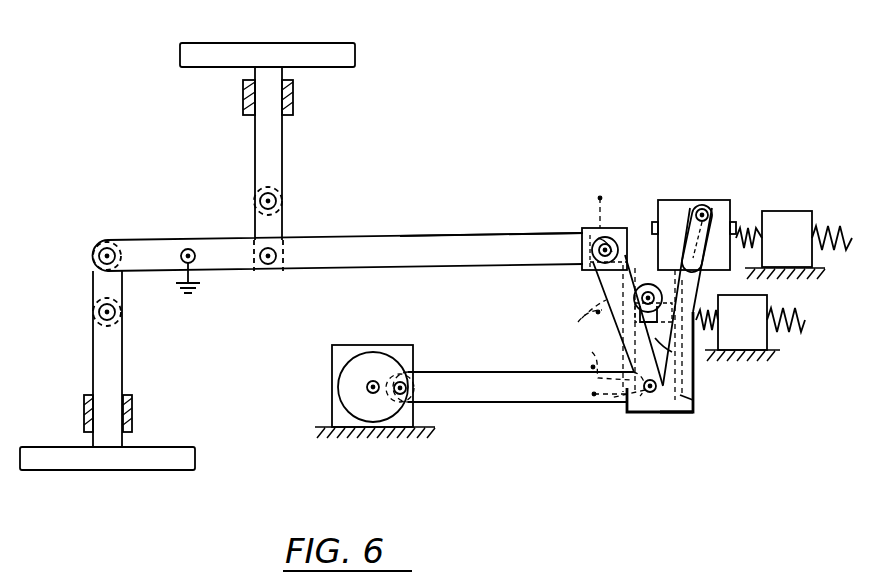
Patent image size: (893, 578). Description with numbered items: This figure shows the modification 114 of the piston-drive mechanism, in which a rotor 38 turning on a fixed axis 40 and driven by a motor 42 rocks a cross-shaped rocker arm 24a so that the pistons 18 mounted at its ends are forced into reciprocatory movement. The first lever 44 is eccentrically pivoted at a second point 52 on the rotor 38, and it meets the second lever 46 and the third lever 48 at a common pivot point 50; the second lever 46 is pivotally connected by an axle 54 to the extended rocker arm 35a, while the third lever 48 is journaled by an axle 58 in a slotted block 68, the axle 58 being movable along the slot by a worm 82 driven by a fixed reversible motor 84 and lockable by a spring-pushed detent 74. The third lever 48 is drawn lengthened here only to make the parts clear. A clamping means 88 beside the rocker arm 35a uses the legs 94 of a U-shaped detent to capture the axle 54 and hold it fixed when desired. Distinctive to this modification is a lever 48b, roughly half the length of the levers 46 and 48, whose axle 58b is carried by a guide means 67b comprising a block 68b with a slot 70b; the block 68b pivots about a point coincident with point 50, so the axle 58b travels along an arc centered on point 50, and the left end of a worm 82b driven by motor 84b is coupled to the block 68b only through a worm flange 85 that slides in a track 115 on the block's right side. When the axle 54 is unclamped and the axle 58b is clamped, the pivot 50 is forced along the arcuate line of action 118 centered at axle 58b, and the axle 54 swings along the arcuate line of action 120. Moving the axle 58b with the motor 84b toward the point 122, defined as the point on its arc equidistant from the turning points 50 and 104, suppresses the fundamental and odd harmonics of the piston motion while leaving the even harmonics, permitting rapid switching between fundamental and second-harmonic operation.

The pistons 18 is at (336, 43).
The modification 114 is at (624, 72).
The rocker arm 24a is at (402, 237).
The rocker arm extended arm 35a is at (487, 248).
The clamping means 88 is at (583, 230).
The arcuate line of action 120 is at (604, 212).
The axle 54 is at (624, 238).
The guide means 67b is at (647, 272).
The axle 58 is at (704, 208).
The block 68 is at (758, 186).
The motor 84 is at (805, 195).
The worm 82 is at (843, 204).
The legs 94 is at (598, 238).
The axle 58b is at (610, 284).
The second lever 46 is at (590, 304).
The point 122 is at (580, 318).
The arcuate line of action 118 is at (592, 352).
The detent 74 is at (690, 302).
The motor 84b is at (767, 300).
The worm 82b is at (786, 334).
The worm flange 85 is at (655, 338).
The third lever 48 is at (693, 392).
The slot 70b is at (694, 400).
The track 115 is at (706, 356).
The turning point 104 is at (594, 394).
The pivot point 50 is at (653, 394).
The block 68b is at (652, 402).
The lever 48b is at (686, 414).
The rotor 38 is at (342, 364).
The fixed axis 40 is at (367, 387).
The second point 52 is at (404, 378).
The motor 42 is at (412, 416).
The first lever 44 is at (550, 397).